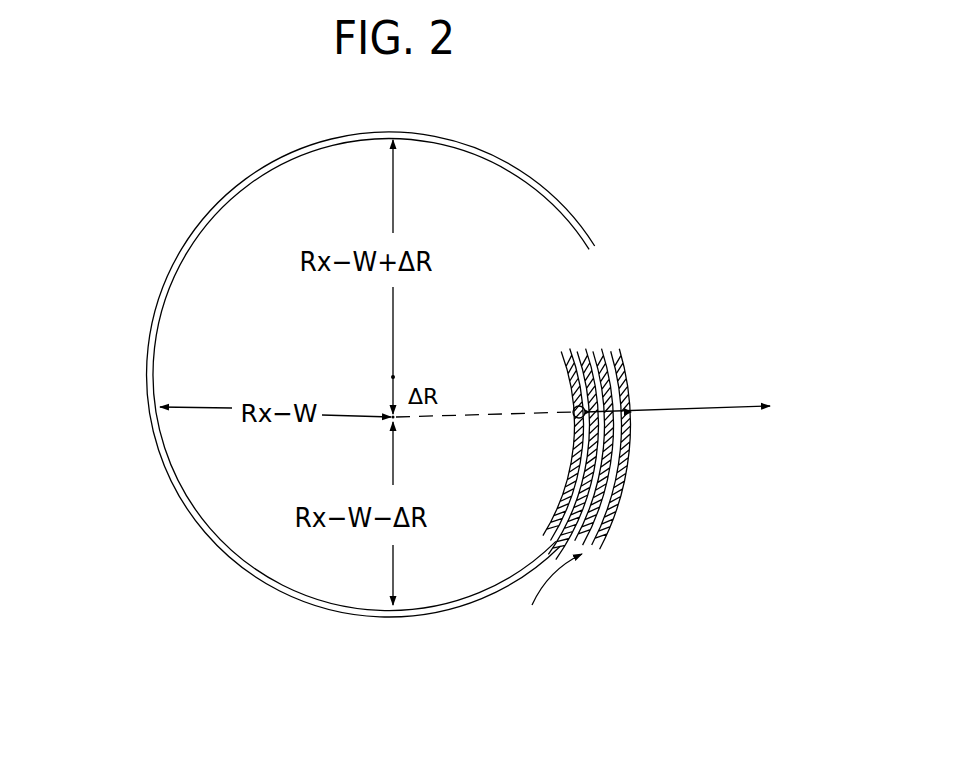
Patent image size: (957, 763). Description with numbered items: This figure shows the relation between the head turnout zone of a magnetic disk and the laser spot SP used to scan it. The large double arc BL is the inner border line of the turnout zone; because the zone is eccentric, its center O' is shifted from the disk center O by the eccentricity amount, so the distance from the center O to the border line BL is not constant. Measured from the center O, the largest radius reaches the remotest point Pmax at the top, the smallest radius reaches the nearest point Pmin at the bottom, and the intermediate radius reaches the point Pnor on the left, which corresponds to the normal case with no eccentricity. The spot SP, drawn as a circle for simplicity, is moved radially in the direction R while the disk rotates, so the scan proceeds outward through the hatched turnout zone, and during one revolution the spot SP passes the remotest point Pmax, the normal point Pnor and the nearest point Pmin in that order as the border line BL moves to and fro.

The inner border line BL is at (594, 236).
The spot SP is at (553, 397).
The center of the magnetic disk O is at (413, 439).
The center of the turnout zone O' is at (415, 351).
The moving direction of the spot R is at (689, 408).
The remotest point Pmax is at (391, 163).
The nearest point Pmin is at (396, 620).
The normal point Pnor is at (155, 411).